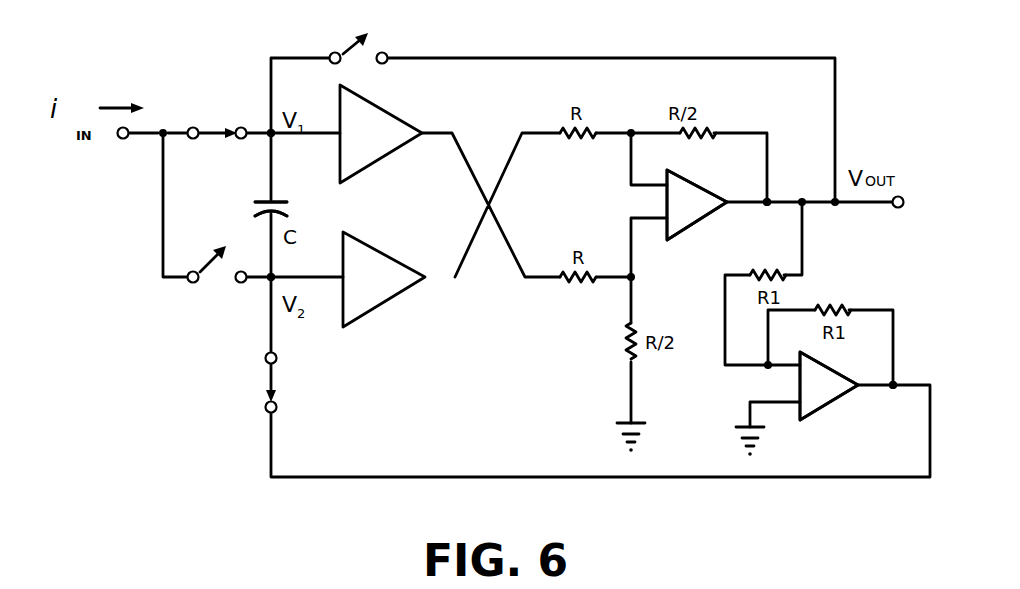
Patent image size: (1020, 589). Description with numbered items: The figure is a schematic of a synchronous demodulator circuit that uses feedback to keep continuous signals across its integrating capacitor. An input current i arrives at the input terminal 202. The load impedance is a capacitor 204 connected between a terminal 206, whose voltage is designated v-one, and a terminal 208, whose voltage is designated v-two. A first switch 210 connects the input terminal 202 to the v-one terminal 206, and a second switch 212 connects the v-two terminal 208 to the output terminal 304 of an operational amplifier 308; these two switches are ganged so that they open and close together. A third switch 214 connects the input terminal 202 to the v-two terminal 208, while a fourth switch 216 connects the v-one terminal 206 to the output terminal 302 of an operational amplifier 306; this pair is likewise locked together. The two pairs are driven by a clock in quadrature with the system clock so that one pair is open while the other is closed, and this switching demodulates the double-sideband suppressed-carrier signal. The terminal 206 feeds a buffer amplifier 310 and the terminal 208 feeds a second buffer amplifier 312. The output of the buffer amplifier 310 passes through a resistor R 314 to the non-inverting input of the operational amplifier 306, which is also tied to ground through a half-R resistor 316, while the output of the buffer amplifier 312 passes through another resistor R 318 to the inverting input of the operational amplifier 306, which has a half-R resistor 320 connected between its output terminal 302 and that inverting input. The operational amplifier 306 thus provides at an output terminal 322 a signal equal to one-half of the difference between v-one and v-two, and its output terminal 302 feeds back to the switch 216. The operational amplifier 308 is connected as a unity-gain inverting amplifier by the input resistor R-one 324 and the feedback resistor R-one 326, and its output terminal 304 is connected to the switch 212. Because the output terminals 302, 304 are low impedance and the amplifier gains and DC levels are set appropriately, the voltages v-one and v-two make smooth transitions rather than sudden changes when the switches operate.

The input terminal 202 is at (122, 140).
The capacitor 204 is at (291, 213).
The terminal 206 is at (269, 132).
The terminal 208 is at (270, 281).
The first switch 210 is at (214, 141).
The second switch 212 is at (266, 377).
The third switch 214 is at (219, 279).
The fourth switch 216 is at (344, 42).
The output terminal 302 is at (768, 199).
The output terminal 304 is at (892, 388).
The operational amplifier 306 is at (691, 239).
The operational amplifier 308 is at (815, 418).
The buffer amplifier 310 is at (389, 119).
The second buffer amplifier 312 is at (386, 306).
The resistor R 314 is at (578, 286).
The resistor R/2 316 is at (628, 348).
The resistor R 318 is at (577, 140).
The resistor R/2 320 is at (709, 130).
The output terminal 322 is at (896, 209).
The input resistor R1 324 is at (761, 272).
The feedback resistor R1 326 is at (825, 311).